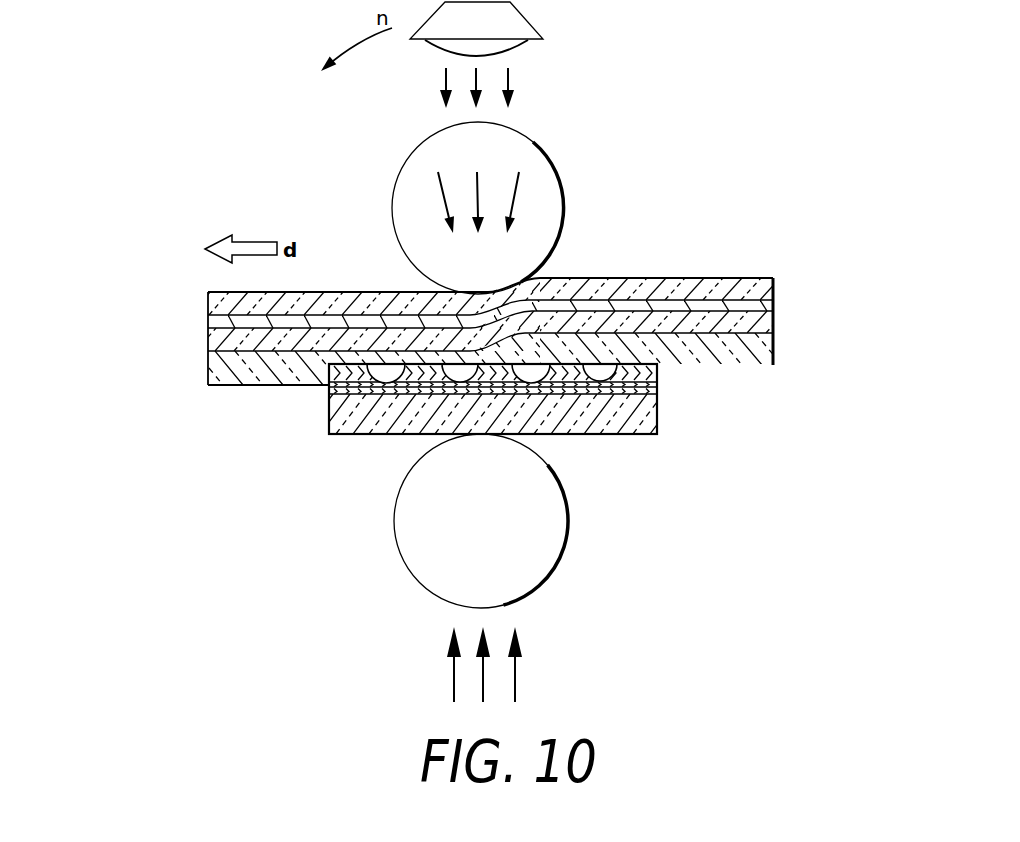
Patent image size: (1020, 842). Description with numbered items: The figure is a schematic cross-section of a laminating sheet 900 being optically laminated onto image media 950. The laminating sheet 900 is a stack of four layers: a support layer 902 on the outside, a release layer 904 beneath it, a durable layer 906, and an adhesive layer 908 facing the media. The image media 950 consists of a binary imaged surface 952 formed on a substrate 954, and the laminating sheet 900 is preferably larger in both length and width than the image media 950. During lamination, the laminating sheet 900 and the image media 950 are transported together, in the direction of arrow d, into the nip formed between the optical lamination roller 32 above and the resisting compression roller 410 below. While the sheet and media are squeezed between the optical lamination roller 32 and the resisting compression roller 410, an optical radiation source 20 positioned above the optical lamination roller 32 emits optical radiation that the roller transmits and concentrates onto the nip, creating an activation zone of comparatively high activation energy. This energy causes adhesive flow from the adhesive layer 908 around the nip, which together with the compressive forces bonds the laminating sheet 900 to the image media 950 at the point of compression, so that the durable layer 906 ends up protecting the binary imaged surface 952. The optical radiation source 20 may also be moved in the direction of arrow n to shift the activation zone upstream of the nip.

The optical radiation source 20 is at (515, 42).
The optical lamination roller 32 is at (567, 175).
The laminating sheet 900 is at (468, 315).
The support layer 902 is at (773, 289).
The release layer 904 is at (773, 303).
The durable layer 906 is at (773, 323).
The adhesive layer 908 is at (773, 350).
The image media 950 is at (470, 399).
The binary imaged surface 952 is at (660, 370).
The substrate 954 is at (660, 412).
The resisting compression roller 410 is at (568, 532).